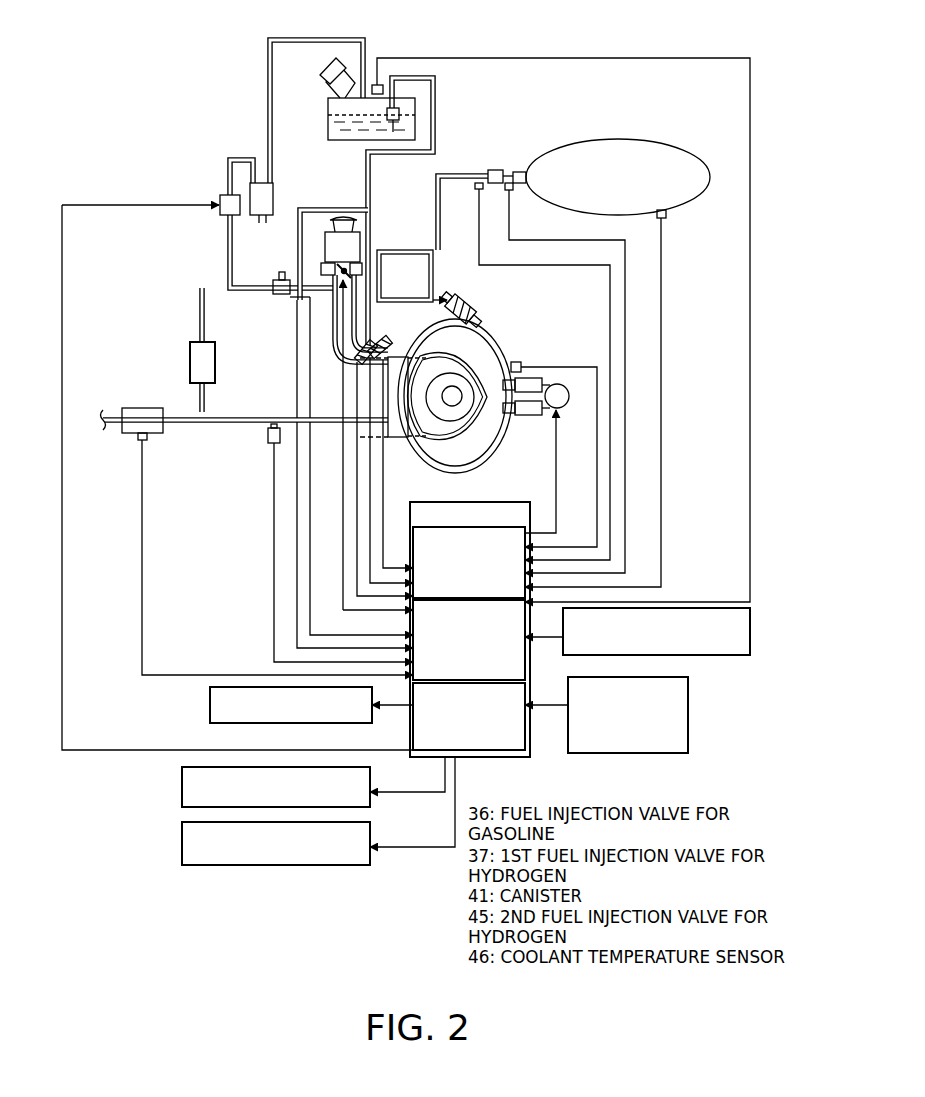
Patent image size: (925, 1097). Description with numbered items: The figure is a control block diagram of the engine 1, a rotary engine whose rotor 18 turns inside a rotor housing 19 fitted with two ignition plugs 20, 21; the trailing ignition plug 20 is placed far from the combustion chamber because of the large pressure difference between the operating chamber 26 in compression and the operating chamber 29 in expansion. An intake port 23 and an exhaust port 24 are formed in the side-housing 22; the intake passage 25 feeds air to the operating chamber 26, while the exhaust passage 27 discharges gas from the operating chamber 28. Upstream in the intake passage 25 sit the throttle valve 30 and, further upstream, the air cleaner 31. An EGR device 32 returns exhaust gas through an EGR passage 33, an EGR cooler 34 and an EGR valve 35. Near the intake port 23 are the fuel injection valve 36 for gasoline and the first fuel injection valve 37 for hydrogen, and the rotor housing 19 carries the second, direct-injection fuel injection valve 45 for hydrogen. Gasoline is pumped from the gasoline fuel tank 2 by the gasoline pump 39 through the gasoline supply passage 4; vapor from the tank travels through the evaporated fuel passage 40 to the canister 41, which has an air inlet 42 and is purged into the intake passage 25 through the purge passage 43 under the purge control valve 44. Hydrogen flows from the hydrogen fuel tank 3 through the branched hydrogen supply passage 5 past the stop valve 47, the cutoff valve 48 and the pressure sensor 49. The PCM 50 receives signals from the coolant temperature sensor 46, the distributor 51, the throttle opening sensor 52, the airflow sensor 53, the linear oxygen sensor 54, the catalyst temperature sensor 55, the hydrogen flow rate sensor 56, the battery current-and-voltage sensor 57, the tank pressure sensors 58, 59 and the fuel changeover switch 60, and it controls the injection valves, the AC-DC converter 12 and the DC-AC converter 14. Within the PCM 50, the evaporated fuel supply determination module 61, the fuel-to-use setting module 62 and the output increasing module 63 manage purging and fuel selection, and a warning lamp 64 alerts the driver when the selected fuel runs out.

The engine 1 is at (505, 332).
The gasoline fuel tank 2 is at (328, 108).
The hydrogen fuel tank 3 is at (608, 140).
The gasoline supply passage 4 is at (435, 133).
The hydrogen supply passage 5 is at (458, 172).
The AC-DC converter 12 is at (182, 790).
The DC-AC converter 14 is at (182, 845).
The rotor 18 is at (450, 440).
The rotor housing 19 is at (500, 455).
The ignition plug 20 is at (548, 383).
The ignition plug 21 is at (520, 413).
The side-housing 22 is at (432, 450).
The intake port 23 is at (440, 358).
The exhaust port 24 is at (420, 440).
The intake passage 25 is at (340, 220).
The operating chamber 26 is at (483, 365).
The exhaust passage 27 is at (215, 430).
The operating chamber 28 is at (388, 420).
The operating chamber 29 is at (132, 408).
The throttle valve 30 is at (360, 245).
The air cleaner 31 is at (325, 238).
The EGR device 32 is at (202, 276).
The EGR passage 33 is at (200, 312).
The EGR cooler 34 is at (190, 360).
The EGR valve 35 is at (270, 300).
The fuel injection valve for gasoline 36 is at (388, 372).
The first fuel injection valve for hydrogen 37 is at (386, 338).
The gasoline pump 39 is at (399, 112).
The evaporated fuel passage 40 is at (363, 42).
The canister 41 is at (273, 195).
The air inlet 42 is at (266, 222).
The purge passage 43 is at (242, 158).
The purge control valve 44 is at (222, 195).
The second fuel injection valve for hydrogen 45 is at (470, 315).
The coolant temperature sensor 46 is at (518, 362).
The stop valve 47 is at (520, 172).
The cutoff valve 48 is at (496, 170).
The pressure sensor 49 is at (476, 189).
The PCM 50 is at (487, 757).
The distributor 51 is at (569, 398).
The throttle opening sensor 52 is at (322, 268).
The airflow sensor 53 is at (380, 278).
The linear O2 sensor 54 is at (268, 438).
The catalyst temperature sensor 55 is at (147, 438).
The hydrogen flow rate sensor 56 is at (512, 190).
The battery current-and-voltage sensor 57 is at (625, 753).
The pressure sensor 58 is at (383, 88).
The pressure sensor 59 is at (666, 214).
The fuel changeover switch 60 is at (705, 656).
The evaporated fuel supply determination module 61 is at (410, 605).
The fuel-to-use setting module 62 is at (525, 652).
The output increasing module 63 is at (525, 720).
The warning lamp 64 is at (210, 705).